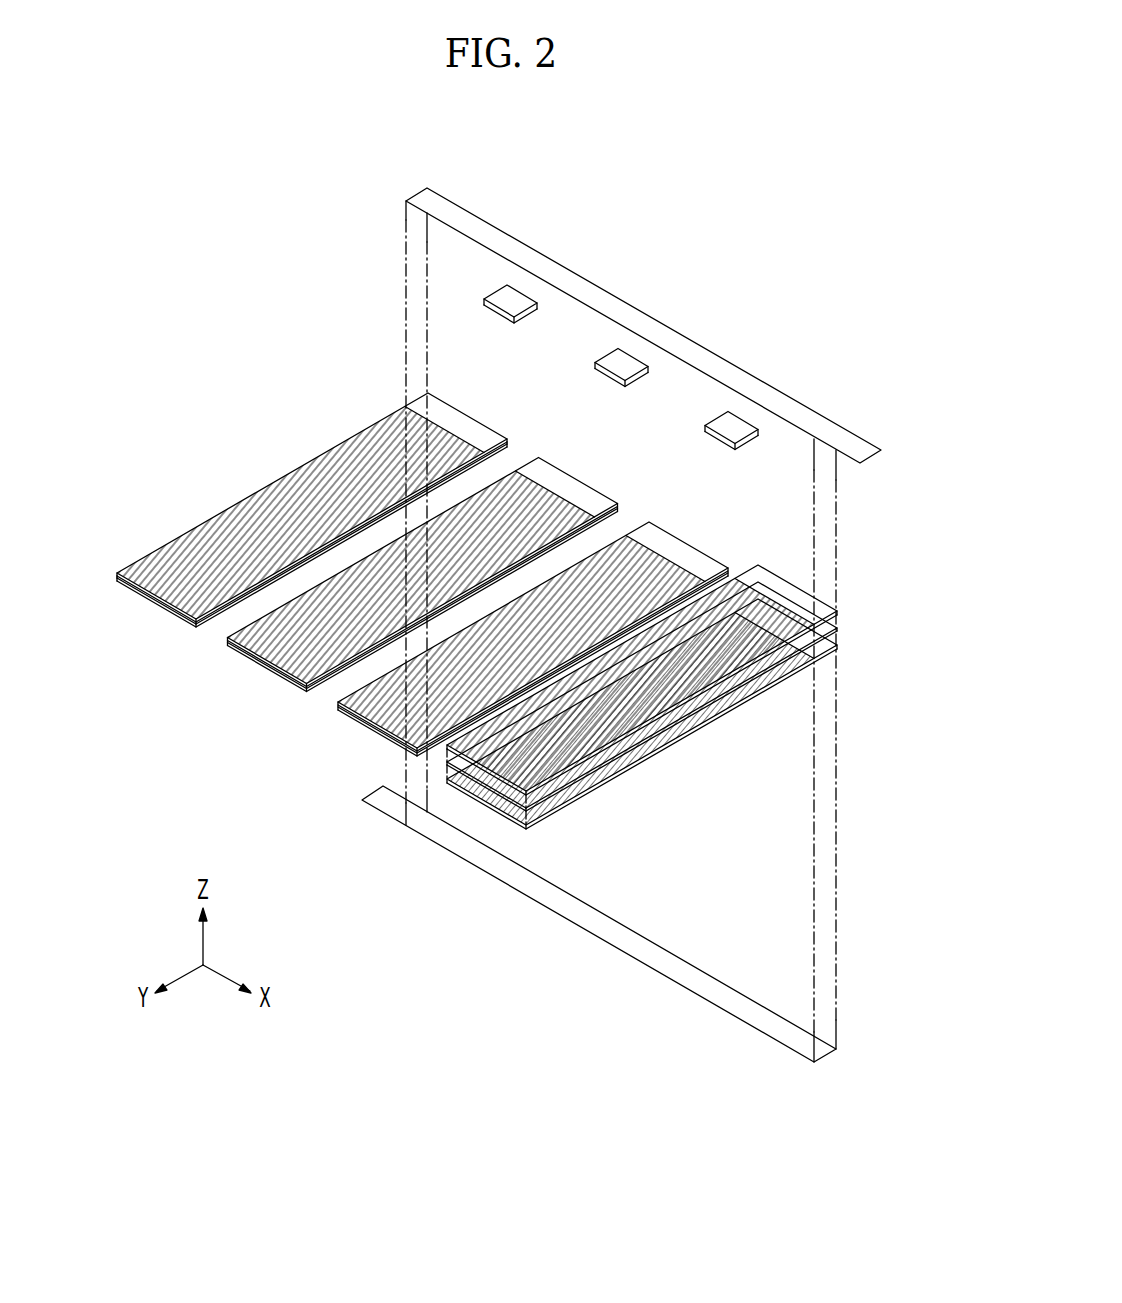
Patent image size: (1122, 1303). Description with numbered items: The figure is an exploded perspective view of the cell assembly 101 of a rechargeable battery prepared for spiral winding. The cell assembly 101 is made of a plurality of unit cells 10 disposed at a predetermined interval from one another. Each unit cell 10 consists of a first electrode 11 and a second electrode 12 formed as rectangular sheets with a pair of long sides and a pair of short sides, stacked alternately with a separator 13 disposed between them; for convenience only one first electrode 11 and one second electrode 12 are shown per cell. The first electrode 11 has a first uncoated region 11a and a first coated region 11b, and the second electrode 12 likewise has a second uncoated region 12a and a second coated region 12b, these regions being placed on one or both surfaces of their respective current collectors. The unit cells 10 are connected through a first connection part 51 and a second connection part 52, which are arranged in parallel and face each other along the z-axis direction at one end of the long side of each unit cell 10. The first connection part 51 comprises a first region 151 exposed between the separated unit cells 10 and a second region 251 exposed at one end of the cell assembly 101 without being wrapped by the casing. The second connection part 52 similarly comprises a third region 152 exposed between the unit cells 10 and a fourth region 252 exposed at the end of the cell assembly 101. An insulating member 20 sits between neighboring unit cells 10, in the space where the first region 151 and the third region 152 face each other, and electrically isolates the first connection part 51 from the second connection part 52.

The unit cell 10 is at (312, 425).
The first electrode 11 is at (228, 524).
The first uncoated region 11a is at (775, 590).
The first coated region 11b is at (737, 608).
The second electrode 12 is at (207, 628).
The second uncoated region 12a is at (820, 658).
The second coated region 12b is at (678, 735).
The separator 13 is at (165, 615).
The insulating member 20 is at (617, 366).
The first connection part 51 is at (830, 281).
The second connection part 52 is at (826, 1165).
The cell assembly 101 is at (588, 607).
The first region 151 is at (515, 243).
The third region 152 is at (600, 935).
The second region 251 is at (856, 447).
The fourth region 252 is at (383, 797).